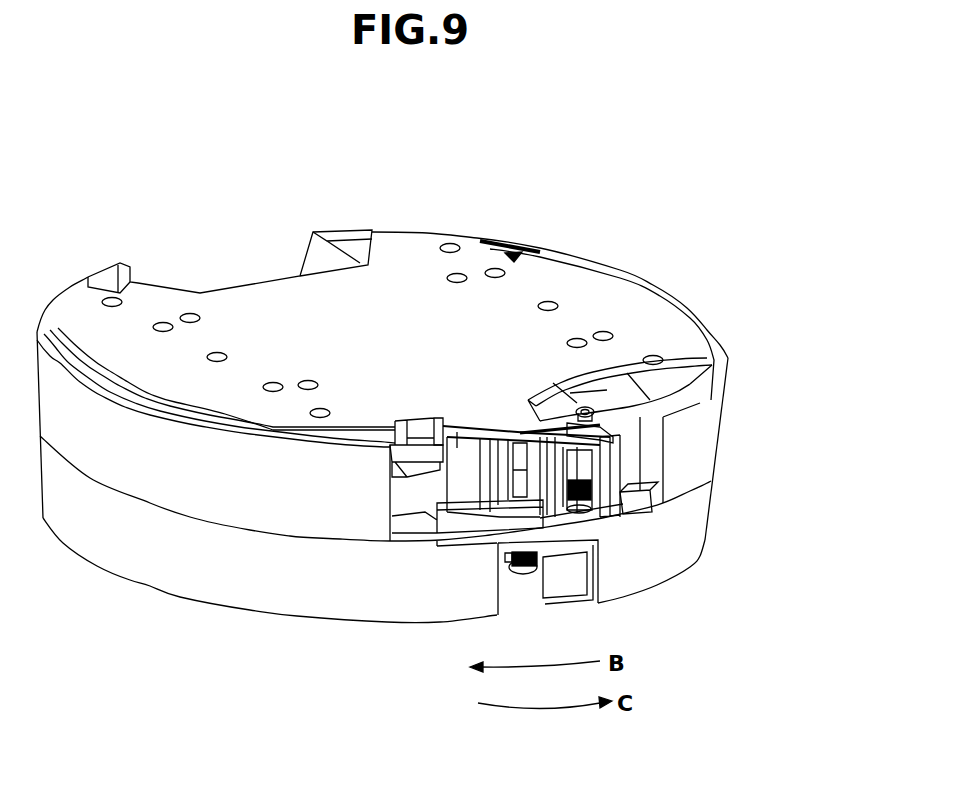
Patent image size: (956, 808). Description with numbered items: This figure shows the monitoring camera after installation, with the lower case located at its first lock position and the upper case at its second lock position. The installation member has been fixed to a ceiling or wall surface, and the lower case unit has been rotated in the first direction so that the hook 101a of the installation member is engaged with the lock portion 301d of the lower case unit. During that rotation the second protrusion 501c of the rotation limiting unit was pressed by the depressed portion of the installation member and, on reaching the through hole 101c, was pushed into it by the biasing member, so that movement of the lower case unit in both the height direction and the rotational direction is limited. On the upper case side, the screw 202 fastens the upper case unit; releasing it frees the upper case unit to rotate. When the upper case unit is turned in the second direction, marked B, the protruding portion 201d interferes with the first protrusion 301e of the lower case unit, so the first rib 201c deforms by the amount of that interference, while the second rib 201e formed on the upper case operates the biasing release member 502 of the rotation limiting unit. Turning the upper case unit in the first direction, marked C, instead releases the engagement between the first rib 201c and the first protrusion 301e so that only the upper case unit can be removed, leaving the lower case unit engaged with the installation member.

The lock portion 301d is at (400, 452).
The hook 101a is at (420, 438).
The protruding portion 201d is at (480, 527).
The first rib 201c is at (517, 505).
The second protrusion 501c is at (587, 413).
The through hole 101c is at (604, 430).
The biasing release member 502 is at (613, 460).
The second rib 201e is at (642, 503).
The screw 202 is at (522, 578).
The first protrusion 301e is at (460, 547).